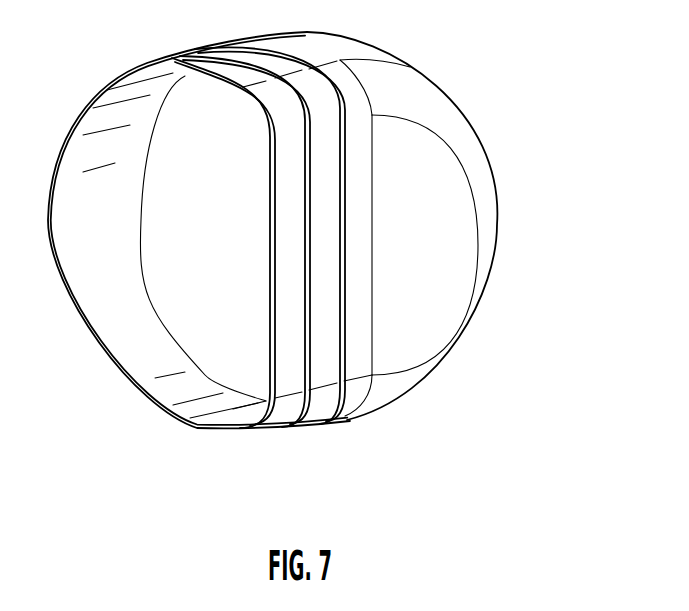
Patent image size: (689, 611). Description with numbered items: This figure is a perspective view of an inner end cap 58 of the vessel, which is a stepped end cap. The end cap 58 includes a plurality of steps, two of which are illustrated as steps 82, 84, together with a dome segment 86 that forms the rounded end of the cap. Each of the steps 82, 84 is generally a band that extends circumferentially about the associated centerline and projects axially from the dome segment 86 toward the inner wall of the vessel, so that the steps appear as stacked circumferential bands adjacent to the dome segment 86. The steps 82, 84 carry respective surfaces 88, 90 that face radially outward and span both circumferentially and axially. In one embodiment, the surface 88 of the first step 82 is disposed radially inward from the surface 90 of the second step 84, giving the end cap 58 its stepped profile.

The inner end cap 58 is at (520, 105).
The step 82 is at (285, 410).
The step 84 is at (313, 405).
The dome segment 86 is at (494, 239).
The surface 88 is at (283, 320).
The surface 90 is at (323, 253).